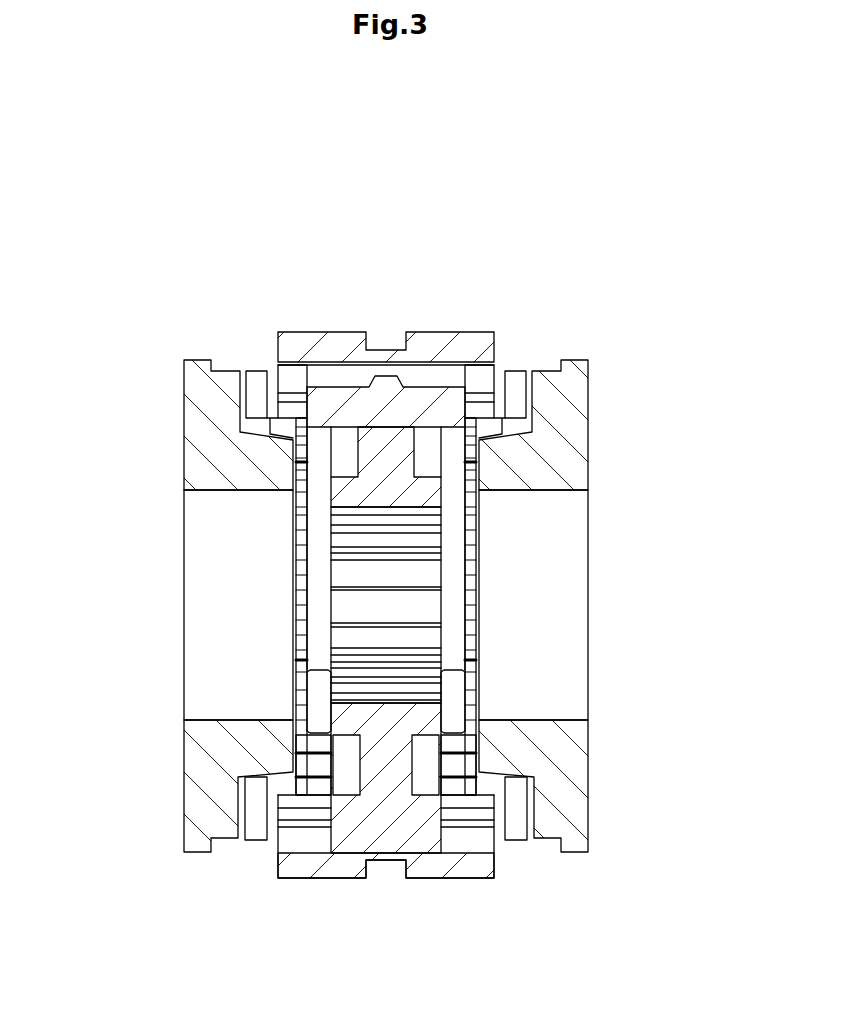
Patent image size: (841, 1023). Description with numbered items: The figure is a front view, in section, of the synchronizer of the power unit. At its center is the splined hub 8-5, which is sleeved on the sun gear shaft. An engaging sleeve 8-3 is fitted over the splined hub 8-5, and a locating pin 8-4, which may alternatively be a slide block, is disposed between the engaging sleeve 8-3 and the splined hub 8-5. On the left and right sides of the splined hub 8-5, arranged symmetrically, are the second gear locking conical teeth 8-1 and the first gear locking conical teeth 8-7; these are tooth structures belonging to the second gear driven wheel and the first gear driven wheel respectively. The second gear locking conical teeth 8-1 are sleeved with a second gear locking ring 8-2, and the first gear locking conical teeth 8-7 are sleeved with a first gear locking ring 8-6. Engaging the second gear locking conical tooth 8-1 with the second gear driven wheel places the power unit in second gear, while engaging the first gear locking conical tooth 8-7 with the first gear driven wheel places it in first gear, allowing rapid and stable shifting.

The second gear locking conical tooth 8-1 is at (215, 415).
The second gear locking ring 8-2 is at (253, 388).
The engaging sleeve 8-3 is at (322, 352).
The locating pin 8-4 is at (382, 407).
The splined hub 8-5 is at (391, 466).
The first gear locking ring 8-6 is at (512, 405).
The first gear locking conical tooth 8-7 is at (547, 437).